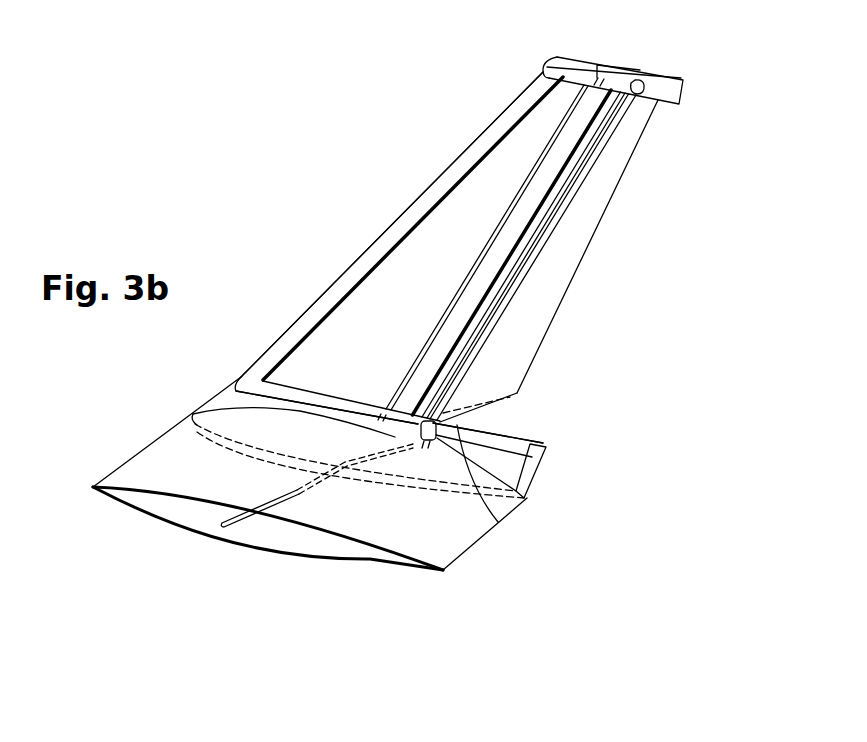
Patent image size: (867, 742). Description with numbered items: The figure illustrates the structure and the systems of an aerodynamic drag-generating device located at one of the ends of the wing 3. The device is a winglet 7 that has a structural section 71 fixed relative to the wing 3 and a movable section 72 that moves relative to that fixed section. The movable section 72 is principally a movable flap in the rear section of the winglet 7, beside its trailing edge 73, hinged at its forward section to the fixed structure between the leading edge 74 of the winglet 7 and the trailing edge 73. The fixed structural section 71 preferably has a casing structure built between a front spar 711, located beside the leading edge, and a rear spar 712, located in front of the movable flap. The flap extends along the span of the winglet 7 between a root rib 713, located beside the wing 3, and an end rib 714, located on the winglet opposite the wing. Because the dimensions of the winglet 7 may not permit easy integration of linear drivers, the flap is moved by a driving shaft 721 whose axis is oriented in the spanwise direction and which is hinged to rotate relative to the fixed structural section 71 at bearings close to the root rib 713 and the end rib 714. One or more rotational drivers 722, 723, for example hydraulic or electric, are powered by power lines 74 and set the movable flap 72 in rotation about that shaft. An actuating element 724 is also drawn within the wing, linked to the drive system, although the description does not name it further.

The wing 3 is at (162, 473).
The winglet 7 is at (400, 209).
The structural section 71 is at (410, 277).
The front spar 711 is at (445, 193).
The rear spar 712 is at (428, 387).
The root rib 713 is at (543, 443).
The end rib 714 is at (670, 106).
The movable section 72 is at (547, 297).
The driving shaft 721 is at (582, 188).
The rotational driver 722 is at (458, 444).
The rotational driver 723 is at (640, 82).
The actuating rod 724 is at (297, 490).
The trailing edge 73 is at (537, 480).
The leading edge 74 is at (490, 124).